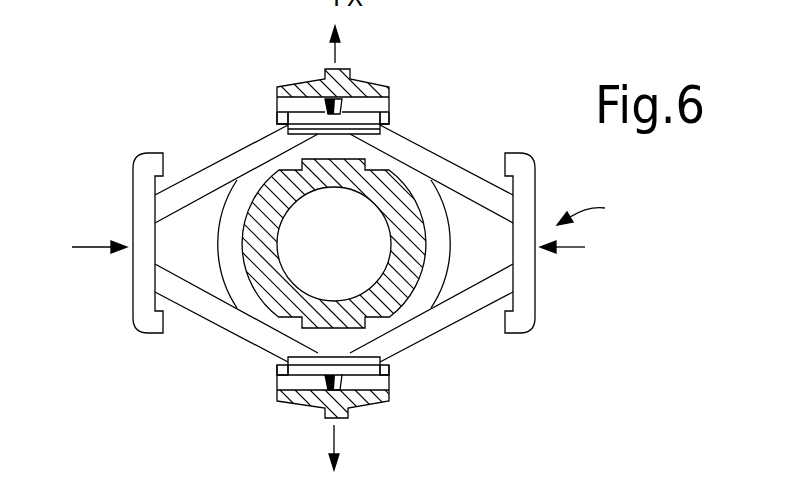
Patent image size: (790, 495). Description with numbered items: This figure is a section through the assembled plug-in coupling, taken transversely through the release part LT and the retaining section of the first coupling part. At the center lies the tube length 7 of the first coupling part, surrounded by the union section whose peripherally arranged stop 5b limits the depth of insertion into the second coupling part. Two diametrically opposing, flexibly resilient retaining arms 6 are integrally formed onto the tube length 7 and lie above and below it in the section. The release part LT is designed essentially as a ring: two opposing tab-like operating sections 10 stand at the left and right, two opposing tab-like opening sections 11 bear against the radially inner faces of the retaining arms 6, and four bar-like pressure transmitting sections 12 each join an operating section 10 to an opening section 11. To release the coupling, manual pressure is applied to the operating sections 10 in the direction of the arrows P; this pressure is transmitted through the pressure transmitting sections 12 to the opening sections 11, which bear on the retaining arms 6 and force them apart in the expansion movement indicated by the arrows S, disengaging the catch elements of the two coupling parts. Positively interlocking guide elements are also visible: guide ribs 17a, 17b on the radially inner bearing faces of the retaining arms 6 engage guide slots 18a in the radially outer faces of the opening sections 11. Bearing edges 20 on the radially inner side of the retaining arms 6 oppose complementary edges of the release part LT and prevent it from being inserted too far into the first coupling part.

The stop 5b is at (238, 228).
The retaining arms 6 is at (297, 88).
The tube length 7 is at (280, 212).
The operating section 10 is at (143, 212).
The opening section 11 is at (369, 114).
The pressure transmitting section 12 is at (207, 180).
The guide rib 17a is at (345, 93).
The guide rib 17b is at (326, 74).
The guide slot 18a is at (341, 124).
The bearing edge 20 is at (283, 119).
The expansion movement arrows S is at (336, 52).
The manual pressure arrows P is at (87, 247).
The release part LT is at (598, 208).